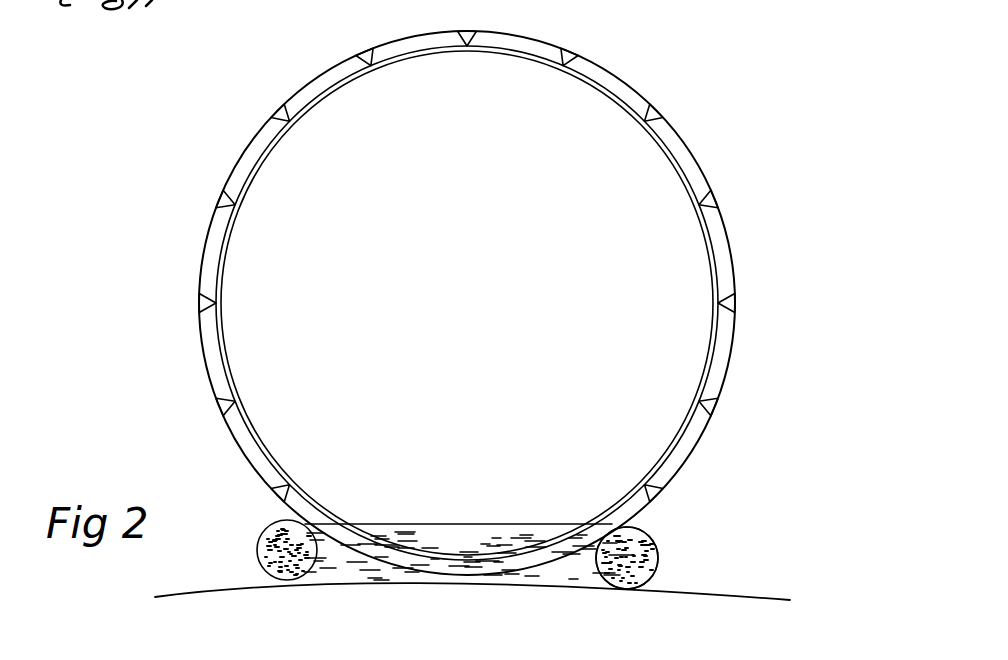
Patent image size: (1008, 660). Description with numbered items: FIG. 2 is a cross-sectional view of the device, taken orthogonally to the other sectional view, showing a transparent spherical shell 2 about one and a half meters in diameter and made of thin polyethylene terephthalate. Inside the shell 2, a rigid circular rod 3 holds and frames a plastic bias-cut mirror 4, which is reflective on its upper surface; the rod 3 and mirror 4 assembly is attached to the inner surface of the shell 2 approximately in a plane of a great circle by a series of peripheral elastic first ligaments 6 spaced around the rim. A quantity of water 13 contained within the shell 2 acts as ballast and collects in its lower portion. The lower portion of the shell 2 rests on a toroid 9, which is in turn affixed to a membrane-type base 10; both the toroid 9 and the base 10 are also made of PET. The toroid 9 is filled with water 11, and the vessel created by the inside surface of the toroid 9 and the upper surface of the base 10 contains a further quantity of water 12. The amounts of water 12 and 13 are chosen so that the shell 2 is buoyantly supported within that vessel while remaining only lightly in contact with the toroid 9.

The transparent spherical shell 2 is at (205, 252).
The rigid circular rod 3 is at (680, 168).
The plastic bias-cut mirror 4 is at (575, 258).
The peripheral elastic first ligaments 6 is at (285, 110).
The toroid 9 is at (657, 547).
The membrane-type base 10 is at (600, 588).
The water 11 is at (628, 565).
The water 12 is at (464, 587).
The water 13 is at (513, 550).